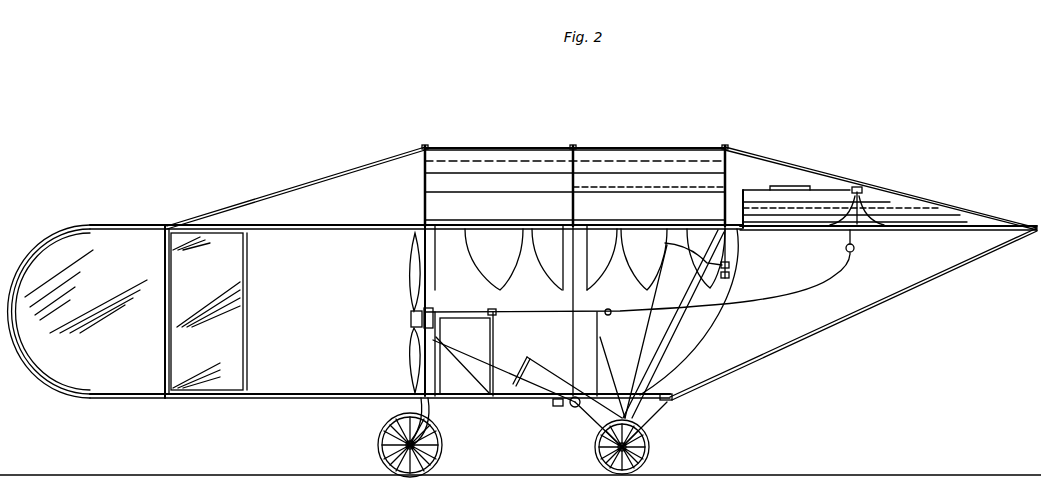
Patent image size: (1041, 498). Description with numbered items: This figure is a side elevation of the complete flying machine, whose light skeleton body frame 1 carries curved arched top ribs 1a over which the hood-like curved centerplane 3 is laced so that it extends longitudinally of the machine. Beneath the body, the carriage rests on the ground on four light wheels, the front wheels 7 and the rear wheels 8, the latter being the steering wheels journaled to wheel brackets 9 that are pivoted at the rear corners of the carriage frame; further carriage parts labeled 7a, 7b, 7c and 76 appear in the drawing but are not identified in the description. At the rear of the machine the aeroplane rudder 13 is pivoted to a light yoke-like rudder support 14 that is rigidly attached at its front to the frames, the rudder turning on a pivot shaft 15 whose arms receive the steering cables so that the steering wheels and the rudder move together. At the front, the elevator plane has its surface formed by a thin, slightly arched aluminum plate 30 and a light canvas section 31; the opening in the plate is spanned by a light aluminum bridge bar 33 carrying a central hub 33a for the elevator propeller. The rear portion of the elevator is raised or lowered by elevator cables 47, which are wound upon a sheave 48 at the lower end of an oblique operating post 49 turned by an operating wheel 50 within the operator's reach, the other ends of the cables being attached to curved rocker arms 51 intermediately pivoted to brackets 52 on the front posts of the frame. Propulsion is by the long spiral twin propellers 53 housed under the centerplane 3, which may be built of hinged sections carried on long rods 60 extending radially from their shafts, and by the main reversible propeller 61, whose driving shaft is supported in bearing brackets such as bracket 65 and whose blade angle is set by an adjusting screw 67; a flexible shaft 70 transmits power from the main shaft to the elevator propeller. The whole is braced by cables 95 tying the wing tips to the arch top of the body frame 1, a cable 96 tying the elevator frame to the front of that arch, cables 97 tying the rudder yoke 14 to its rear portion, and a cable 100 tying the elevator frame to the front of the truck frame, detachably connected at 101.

The body frame 1 is at (575, 184).
The curved top ribs 1a is at (447, 147).
The centerplane 3 is at (600, 160).
The front wheels 7 is at (650, 450).
The wheel bracket 7a is at (553, 410).
The wheel lever 7b is at (508, 390).
The wheel pivot 7c is at (572, 408).
The rear wheels 8 is at (440, 463).
The wheel brackets 9 is at (392, 425).
The aeroplane rudder 13 is at (136, 311).
The rudder support 14 is at (348, 230).
The pivot shaft 15 is at (167, 357).
The aluminum plate 30 is at (917, 220).
The canvas section 31 is at (987, 223).
The bridge bar 33 is at (880, 207).
The central hub 33a is at (860, 192).
The elevator cables 47 is at (732, 277).
The sheave 48 is at (640, 423).
The operating post 49 is at (570, 370).
The operating wheel 50 is at (475, 372).
The rocker arms 51 is at (845, 250).
The brackets 52 is at (700, 263).
The spiral twin propellers 53 is at (520, 240).
The long rods 60 is at (411, 320).
The reversible propeller 61 is at (412, 277).
The bearing bracket 65 is at (447, 310).
The adjusting screw 67 is at (497, 316).
The flexible shaft 70 is at (770, 297).
The stay rod 76 is at (748, 340).
The cables 95 is at (573, 187).
The cable 96 is at (953, 205).
The cables 97 is at (322, 185).
The cable 100 is at (900, 293).
The detachable connection 101 is at (672, 397).